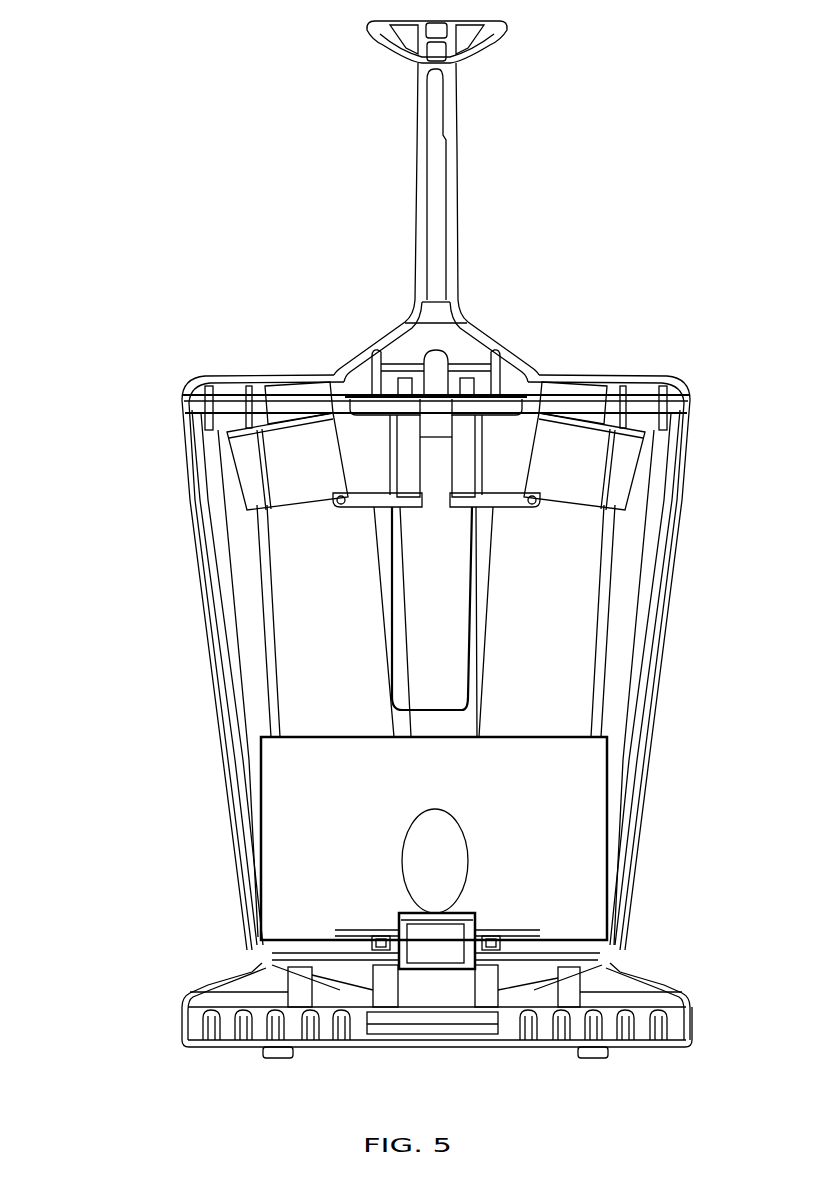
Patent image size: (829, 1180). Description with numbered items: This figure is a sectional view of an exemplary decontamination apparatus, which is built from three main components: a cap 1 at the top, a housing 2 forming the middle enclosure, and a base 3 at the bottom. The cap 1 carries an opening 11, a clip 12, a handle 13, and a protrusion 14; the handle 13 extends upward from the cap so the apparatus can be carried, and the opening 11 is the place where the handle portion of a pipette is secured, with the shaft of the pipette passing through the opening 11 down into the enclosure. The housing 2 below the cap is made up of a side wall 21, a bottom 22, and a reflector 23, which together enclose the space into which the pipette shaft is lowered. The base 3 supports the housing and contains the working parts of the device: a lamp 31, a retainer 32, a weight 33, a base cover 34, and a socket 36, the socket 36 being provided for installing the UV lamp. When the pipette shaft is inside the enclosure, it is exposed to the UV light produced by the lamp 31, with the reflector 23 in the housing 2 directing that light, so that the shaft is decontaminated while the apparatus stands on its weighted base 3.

The cap 1 is at (565, 333).
The housing 2 is at (170, 697).
The base 3 is at (160, 1010).
The opening 11 is at (283, 368).
The clip 12 is at (300, 450).
The handle 13 is at (418, 160).
The protrusion 14 is at (390, 562).
The side wall 21 is at (225, 752).
The bottom 22 is at (248, 945).
The reflector 23 is at (262, 813).
The lamp 31 is at (470, 853).
The retainer 32 is at (485, 940).
The weight 33 is at (615, 1022).
The base cover 34 is at (628, 980).
The socket 36 is at (470, 912).